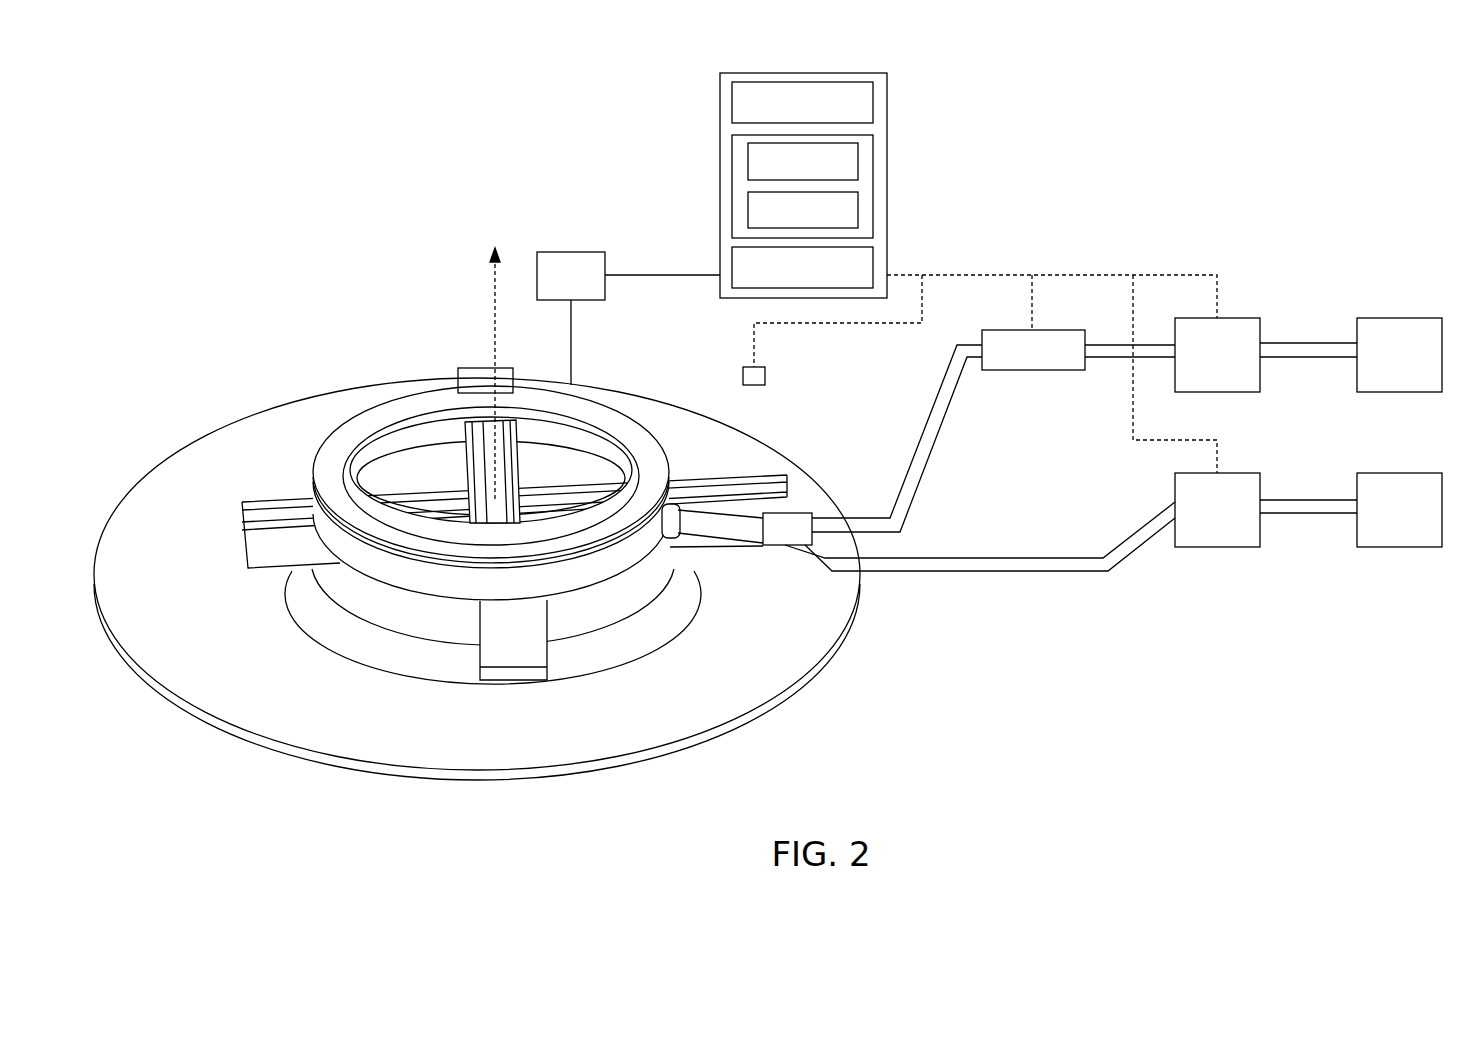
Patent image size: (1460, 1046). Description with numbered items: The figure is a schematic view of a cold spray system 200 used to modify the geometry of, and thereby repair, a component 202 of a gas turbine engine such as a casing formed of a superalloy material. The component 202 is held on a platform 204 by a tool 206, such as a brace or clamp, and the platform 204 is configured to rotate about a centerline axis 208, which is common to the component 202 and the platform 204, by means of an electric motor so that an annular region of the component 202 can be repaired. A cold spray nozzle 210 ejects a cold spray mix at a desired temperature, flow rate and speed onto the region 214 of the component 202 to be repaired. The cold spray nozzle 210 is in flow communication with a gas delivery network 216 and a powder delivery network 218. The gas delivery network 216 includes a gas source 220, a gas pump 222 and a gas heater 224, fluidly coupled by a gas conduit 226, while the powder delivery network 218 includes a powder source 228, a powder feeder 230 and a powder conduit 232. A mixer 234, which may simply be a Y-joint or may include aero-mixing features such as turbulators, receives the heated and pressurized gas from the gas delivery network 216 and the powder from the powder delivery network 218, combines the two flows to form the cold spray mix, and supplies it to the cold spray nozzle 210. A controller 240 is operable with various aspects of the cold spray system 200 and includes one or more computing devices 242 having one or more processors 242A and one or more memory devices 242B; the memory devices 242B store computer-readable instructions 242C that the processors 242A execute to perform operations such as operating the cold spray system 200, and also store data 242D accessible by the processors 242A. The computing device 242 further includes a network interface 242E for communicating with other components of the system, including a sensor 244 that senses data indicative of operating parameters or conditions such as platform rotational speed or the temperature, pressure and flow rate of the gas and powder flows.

The cold spray system 200 is at (1165, 156).
The component 202 is at (372, 460).
The platform 204 is at (762, 640).
The tool 206 is at (443, 497).
The centerline axis 208 is at (498, 277).
The cold spray nozzle 210 is at (680, 532).
The region 214 is at (604, 570).
The gas delivery network 216 is at (1262, 268).
The powder delivery network 218 is at (1113, 557).
The gas source 220 is at (1380, 366).
The gas pump 222 is at (1197, 366).
The gas heater 224 is at (1013, 361).
The gas conduit 226 is at (937, 440).
The powder source 228 is at (1380, 521).
The powder feeder 230 is at (1197, 521).
The powder conduit 232 is at (1045, 572).
The mixer 234 is at (795, 513).
The controller 240 is at (797, 176).
The computing device 242 is at (804, 184).
The processor 242A is at (777, 113).
The memory device 242B is at (851, 175).
The computer-readable instructions 242C is at (860, 165).
The data 242D is at (860, 210).
The network interface 242E is at (733, 263).
The sensor 244 is at (775, 378).